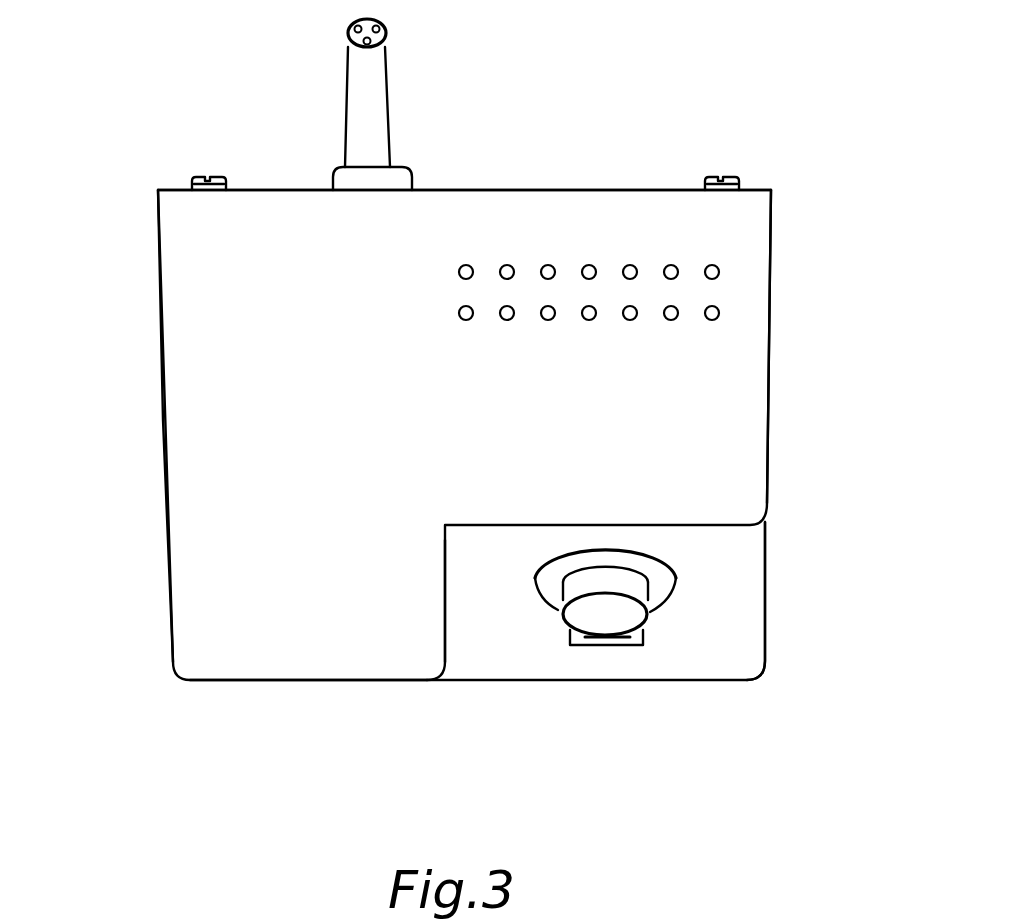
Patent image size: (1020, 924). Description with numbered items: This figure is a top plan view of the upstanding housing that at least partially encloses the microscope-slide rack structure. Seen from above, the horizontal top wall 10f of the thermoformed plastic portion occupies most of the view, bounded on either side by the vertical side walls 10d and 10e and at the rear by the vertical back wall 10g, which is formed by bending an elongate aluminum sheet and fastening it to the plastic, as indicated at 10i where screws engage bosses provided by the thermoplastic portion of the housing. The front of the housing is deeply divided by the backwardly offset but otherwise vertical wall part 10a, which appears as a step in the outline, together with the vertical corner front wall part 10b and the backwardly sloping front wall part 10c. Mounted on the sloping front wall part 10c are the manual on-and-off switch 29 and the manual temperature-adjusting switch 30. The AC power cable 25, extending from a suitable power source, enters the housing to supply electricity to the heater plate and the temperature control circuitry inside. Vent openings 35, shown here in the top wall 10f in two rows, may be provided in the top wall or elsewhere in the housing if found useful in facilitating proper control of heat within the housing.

The backwardly offset vertical wall part 10a is at (445, 585).
The vertical corner front wall part 10b is at (295, 680).
The backwardly sloping front wall part 10c is at (710, 627).
The vertical side wall 10d is at (163, 420).
The vertical side wall 10e is at (767, 422).
The horizontal top wall 10f is at (490, 424).
The vertical back wall 10g is at (632, 185).
The fastening screws 10i is at (208, 178).
The AC power cable 25 is at (388, 77).
The manual on-and-off switch 29 is at (633, 645).
The manual temperature-adjusting switch 30 is at (663, 590).
The vent openings 35 is at (468, 264).